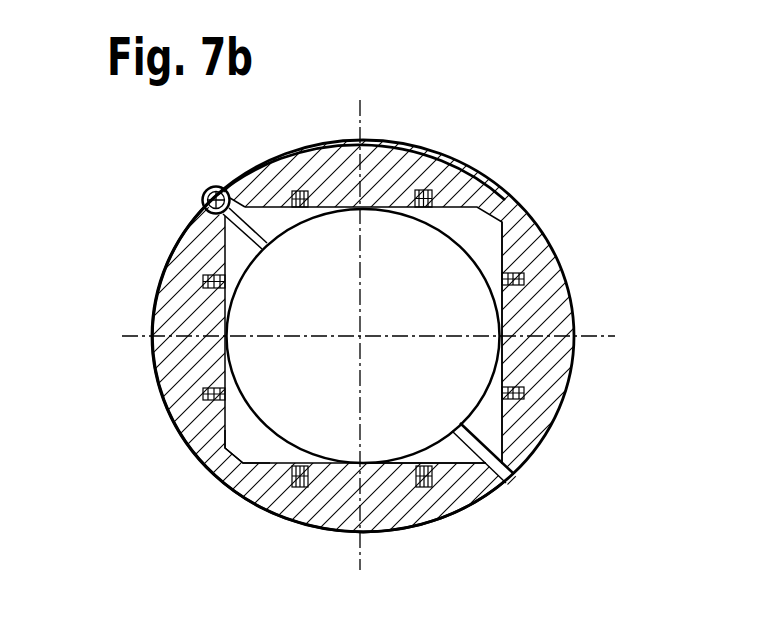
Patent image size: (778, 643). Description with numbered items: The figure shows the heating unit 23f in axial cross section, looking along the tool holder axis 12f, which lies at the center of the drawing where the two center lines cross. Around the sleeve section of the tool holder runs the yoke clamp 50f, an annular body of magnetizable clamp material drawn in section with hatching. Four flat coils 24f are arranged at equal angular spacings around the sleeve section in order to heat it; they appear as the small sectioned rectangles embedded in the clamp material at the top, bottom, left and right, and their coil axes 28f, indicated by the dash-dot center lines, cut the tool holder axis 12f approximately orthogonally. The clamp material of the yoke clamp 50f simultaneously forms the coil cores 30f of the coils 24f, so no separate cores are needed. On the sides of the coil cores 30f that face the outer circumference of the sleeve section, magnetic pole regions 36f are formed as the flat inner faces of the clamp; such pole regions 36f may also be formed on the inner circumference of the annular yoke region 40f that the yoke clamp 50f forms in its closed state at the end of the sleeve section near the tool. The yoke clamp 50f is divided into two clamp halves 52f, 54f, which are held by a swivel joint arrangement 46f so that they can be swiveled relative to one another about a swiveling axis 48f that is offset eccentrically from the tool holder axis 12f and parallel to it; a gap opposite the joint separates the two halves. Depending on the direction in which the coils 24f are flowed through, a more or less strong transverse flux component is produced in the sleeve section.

The tool holder axis 12f is at (367, 329).
The heating unit 23f is at (560, 453).
The flat coils 24f is at (205, 394).
The coil axes 28f is at (134, 339).
The coil cores 30f is at (530, 309).
The magnetic pole regions 36f is at (371, 207).
The annular yoke region 40f is at (258, 445).
The swivel joint arrangement 46f is at (217, 186).
The swiveling axis 48f is at (202, 199).
The yoke clamp 50f is at (150, 271).
The clamp half 52f is at (490, 171).
The clamp half 54f is at (277, 502).